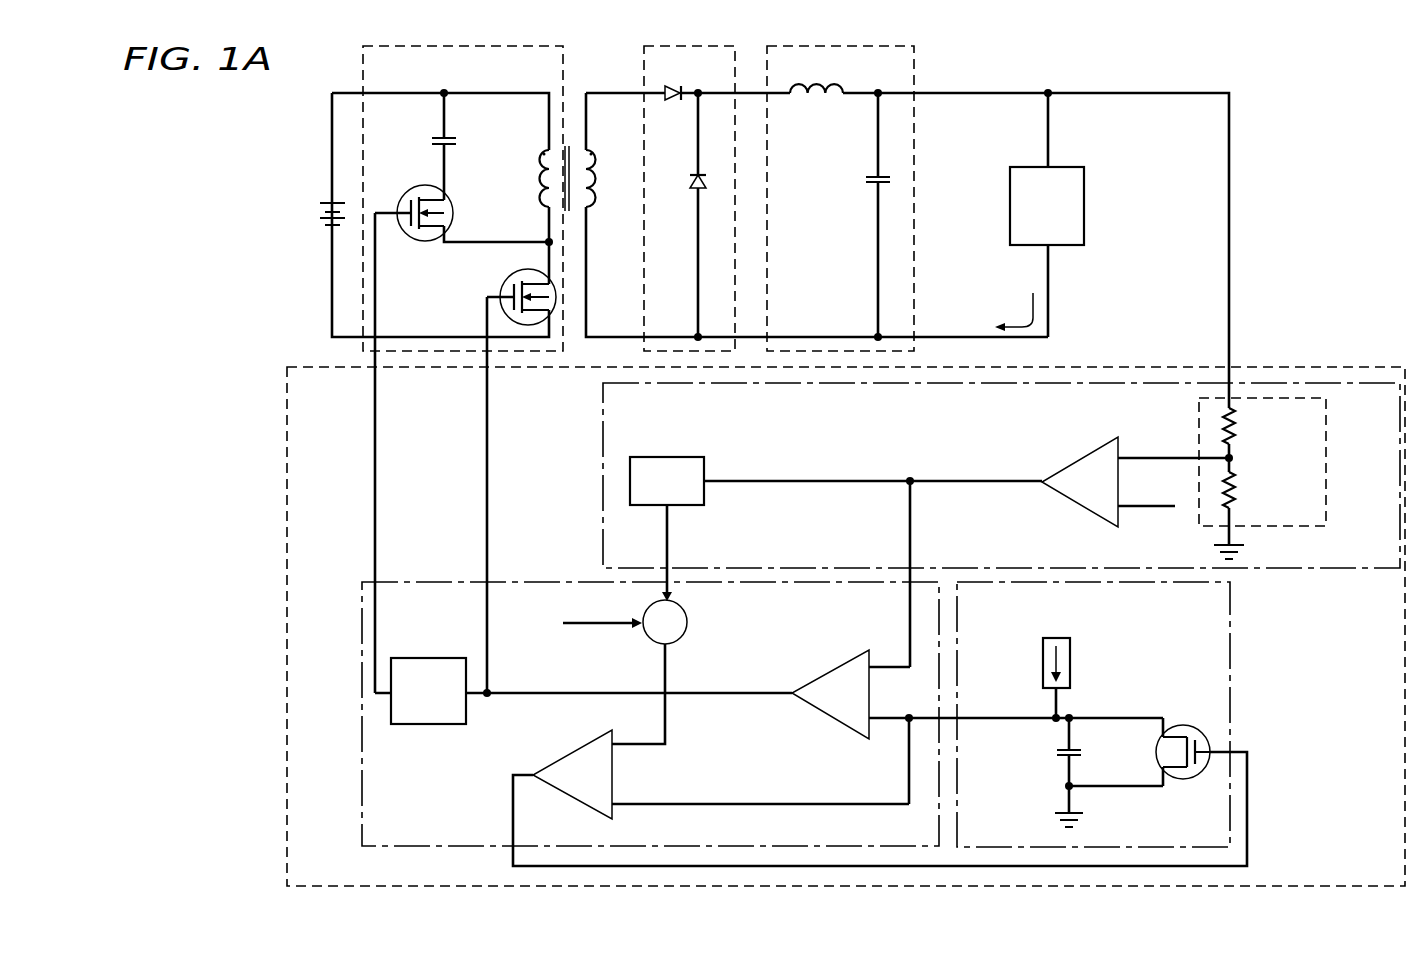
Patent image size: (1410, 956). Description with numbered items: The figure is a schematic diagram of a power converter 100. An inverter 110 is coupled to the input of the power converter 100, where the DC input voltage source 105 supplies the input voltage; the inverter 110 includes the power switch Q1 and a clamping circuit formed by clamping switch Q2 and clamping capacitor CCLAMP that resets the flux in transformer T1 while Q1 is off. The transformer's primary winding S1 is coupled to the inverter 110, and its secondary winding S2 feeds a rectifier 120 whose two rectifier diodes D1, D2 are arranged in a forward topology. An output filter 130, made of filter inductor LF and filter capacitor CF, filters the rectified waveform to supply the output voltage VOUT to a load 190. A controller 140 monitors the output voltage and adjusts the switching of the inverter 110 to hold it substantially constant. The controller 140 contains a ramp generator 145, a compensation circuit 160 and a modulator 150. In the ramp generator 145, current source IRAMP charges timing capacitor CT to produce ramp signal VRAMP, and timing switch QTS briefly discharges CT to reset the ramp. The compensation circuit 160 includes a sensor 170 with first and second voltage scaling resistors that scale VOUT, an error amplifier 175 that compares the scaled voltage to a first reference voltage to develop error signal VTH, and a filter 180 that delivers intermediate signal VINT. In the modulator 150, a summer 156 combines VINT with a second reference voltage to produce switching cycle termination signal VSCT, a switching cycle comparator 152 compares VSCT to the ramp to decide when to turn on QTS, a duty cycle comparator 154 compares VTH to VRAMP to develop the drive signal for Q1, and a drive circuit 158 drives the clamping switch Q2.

The power converter 100 is at (247, 134).
The input voltage source 105 is at (318, 223).
The inverter 110 is at (364, 50).
The rectifier 120 is at (644, 56).
The output filter 130 is at (915, 64).
The controller 140 is at (287, 858).
The ramp generator 145 is at (1232, 606).
The modulator 150 is at (362, 826).
The switching cycle comparator 152 is at (572, 752).
The duty cycle comparator 154 is at (836, 665).
The summer 156 is at (687, 623).
The drive circuit 158 is at (426, 658).
The compensation circuit 160 is at (603, 410).
The sensor 170 is at (1326, 513).
The error amplifier 175 is at (1097, 452).
The filter 180 is at (705, 466).
The load 190 is at (1085, 205).